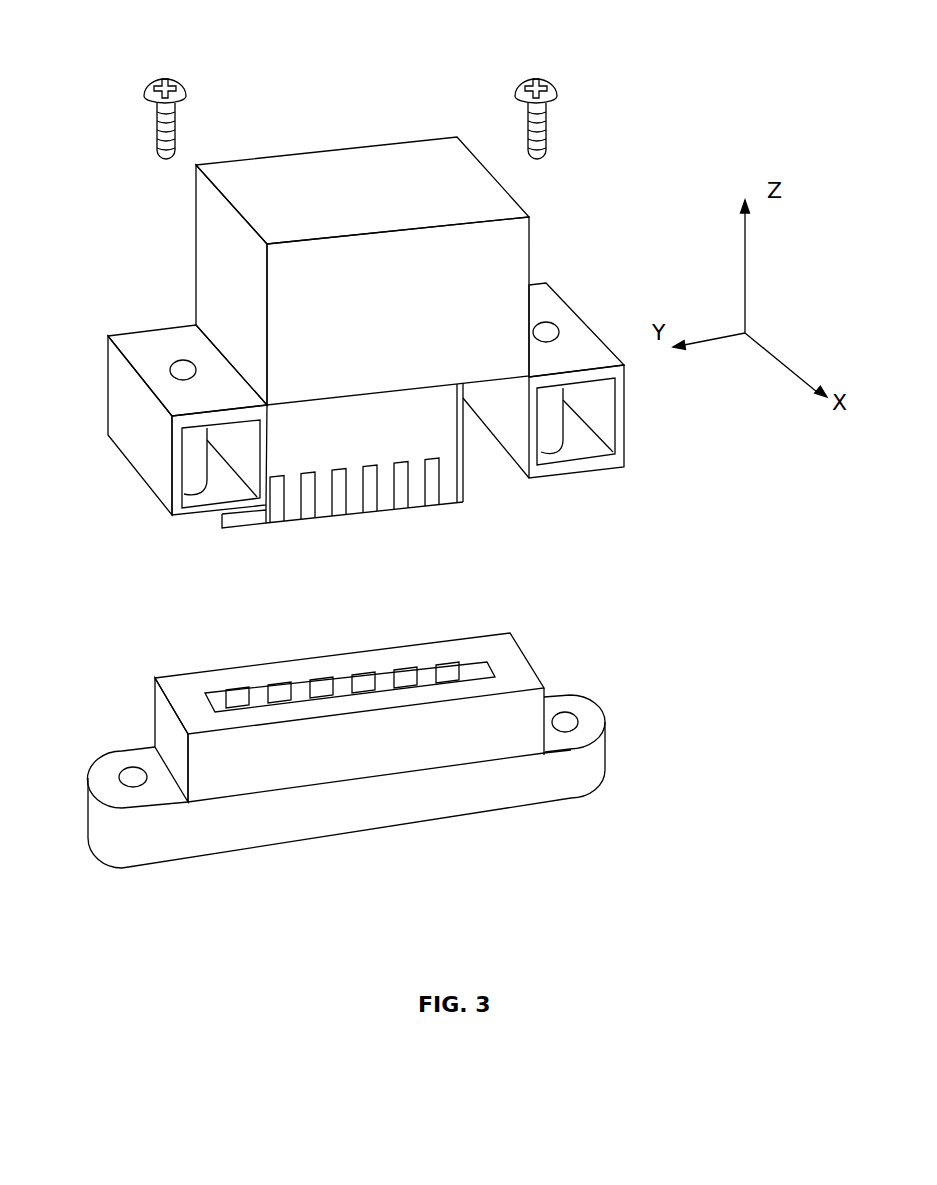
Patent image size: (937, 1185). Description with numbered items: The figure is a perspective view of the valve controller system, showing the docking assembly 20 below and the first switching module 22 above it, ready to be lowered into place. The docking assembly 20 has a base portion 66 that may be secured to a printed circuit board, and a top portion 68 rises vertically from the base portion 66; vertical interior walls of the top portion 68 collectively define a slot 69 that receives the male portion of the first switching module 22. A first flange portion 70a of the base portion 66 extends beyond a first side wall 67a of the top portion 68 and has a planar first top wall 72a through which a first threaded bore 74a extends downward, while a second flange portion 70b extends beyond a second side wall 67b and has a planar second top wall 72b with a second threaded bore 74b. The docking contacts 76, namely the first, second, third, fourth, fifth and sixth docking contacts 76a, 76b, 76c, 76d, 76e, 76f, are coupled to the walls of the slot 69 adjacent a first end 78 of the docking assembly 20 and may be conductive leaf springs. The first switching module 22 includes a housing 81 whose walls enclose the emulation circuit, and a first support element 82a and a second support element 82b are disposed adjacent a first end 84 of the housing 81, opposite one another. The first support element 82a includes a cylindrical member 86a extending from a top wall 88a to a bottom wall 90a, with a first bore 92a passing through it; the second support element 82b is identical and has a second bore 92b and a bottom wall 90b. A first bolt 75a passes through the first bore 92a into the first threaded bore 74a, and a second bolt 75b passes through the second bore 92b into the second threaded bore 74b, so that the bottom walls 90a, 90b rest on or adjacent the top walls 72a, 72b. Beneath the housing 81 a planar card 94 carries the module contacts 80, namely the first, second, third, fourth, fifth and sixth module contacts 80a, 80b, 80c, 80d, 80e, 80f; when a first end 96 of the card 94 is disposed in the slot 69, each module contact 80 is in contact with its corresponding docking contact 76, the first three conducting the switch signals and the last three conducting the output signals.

The docking assembly 20 is at (371, 751).
The first switching module 22 is at (382, 308).
The base portion 66 is at (378, 820).
The first side wall 67a is at (160, 717).
The second side wall 67b is at (523, 652).
The top portion 68 is at (513, 705).
The slot 69 is at (473, 655).
The first flange portion 70a is at (142, 830).
The second flange portion 70b is at (563, 780).
The first top wall 72a is at (86, 750).
The second top wall 72b is at (620, 697).
The first threaded bore 74a is at (130, 767).
The second threaded bore 74b is at (578, 725).
The first bolt 75a is at (155, 78).
The second bolt 75b is at (548, 78).
The docking contacts 76 is at (317, 650).
The first docking contact 76a is at (240, 698).
The second docking contact 76b is at (278, 693).
The third docking contact 76c is at (318, 690).
The fourth docking contact 76d is at (363, 685).
The fifth docking contact 76e is at (405, 682).
The sixth docking contact 76f is at (447, 672).
The first end 78 is at (574, 700).
The module contacts 80 is at (413, 520).
The first module contact 80a is at (278, 513).
The second module contact 80b is at (307, 508).
The third module contact 80c is at (338, 505).
The fourth module contact 80d is at (367, 498).
The fifth module contact 80e is at (403, 502).
The sixth module contact 80f is at (430, 493).
The housing 81 is at (507, 240).
The first support element 82a is at (151, 419).
The second support element 82b is at (596, 402).
The first end 84 is at (282, 382).
The cylindrical member 86a is at (197, 465).
The top wall 88a is at (128, 352).
The bottom wall 90a is at (127, 468).
The bottom wall 90b is at (568, 477).
The first bore 92a is at (168, 368).
The second bore 92b is at (550, 323).
The card 94 is at (438, 432).
The first end 96 is at (215, 518).